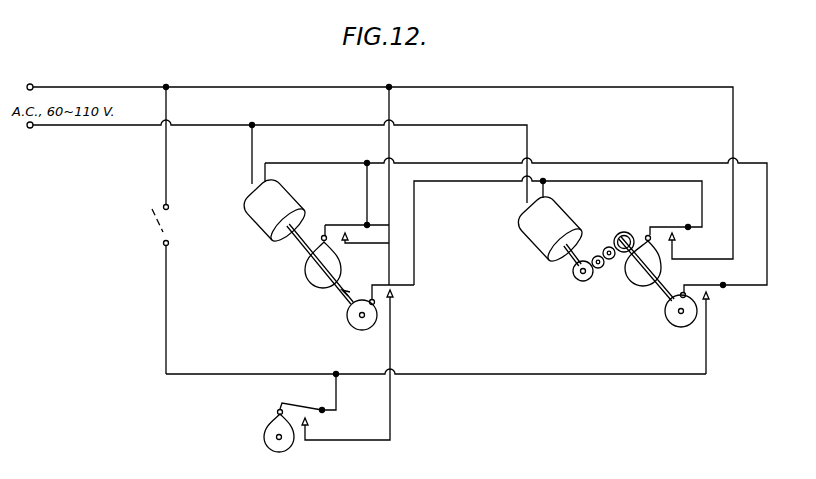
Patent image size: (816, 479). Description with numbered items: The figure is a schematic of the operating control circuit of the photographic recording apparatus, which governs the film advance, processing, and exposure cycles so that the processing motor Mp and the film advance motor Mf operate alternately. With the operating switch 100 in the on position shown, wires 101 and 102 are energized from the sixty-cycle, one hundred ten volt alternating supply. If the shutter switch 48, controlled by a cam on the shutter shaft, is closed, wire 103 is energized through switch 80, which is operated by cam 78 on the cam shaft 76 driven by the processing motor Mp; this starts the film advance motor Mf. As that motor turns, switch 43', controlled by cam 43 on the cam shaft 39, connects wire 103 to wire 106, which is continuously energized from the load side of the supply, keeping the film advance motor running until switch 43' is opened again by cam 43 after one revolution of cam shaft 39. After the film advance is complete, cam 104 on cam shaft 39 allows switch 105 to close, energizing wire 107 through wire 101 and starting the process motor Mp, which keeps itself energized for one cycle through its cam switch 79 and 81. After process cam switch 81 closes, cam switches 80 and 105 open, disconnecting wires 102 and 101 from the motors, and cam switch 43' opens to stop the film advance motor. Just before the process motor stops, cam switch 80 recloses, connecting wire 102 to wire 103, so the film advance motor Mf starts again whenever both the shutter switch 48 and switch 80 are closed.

The operating switch 100 is at (160, 232).
The wire 101 is at (264, 373).
The wire 102 is at (338, 397).
The shutter switch 48 is at (313, 416).
The cam shaft 76 is at (302, 254).
The cam switch 79 is at (313, 279).
The cam 78 is at (355, 323).
The process cam switch 81 is at (352, 236).
The switch 80 is at (398, 290).
The wire 103 is at (468, 186).
The wire 106 is at (547, 86).
The wire 107 is at (619, 156).
The switch 105 is at (718, 289).
The switch 43' is at (668, 216).
The cam 43 is at (632, 279).
The cam shaft 39 is at (657, 291).
The cam 104 is at (674, 327).
The processing motor Mp is at (268, 214).
The film advance motor Mf is at (541, 233).